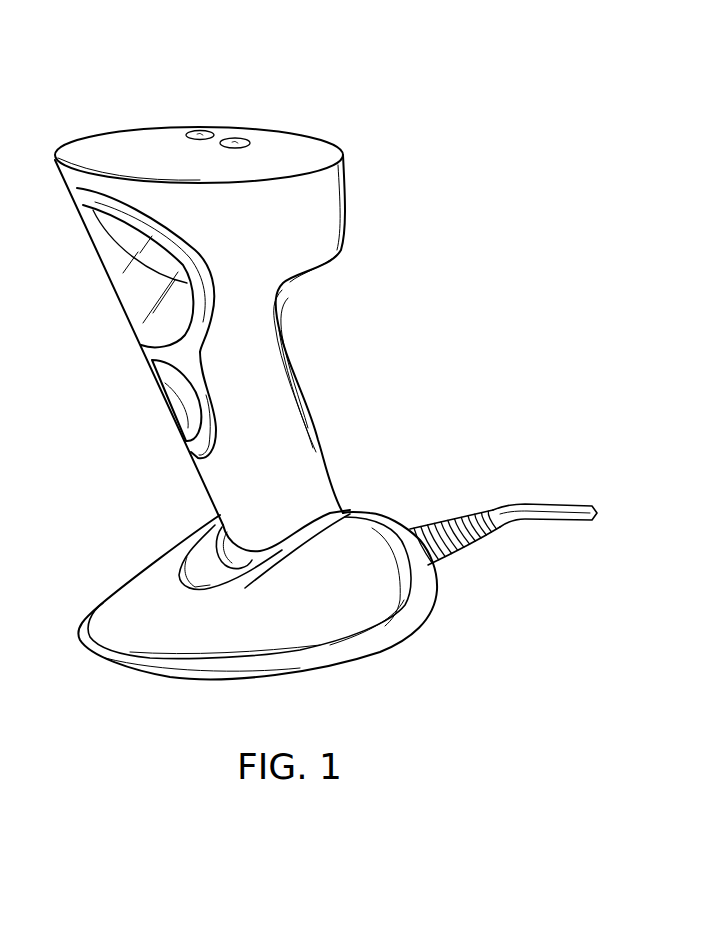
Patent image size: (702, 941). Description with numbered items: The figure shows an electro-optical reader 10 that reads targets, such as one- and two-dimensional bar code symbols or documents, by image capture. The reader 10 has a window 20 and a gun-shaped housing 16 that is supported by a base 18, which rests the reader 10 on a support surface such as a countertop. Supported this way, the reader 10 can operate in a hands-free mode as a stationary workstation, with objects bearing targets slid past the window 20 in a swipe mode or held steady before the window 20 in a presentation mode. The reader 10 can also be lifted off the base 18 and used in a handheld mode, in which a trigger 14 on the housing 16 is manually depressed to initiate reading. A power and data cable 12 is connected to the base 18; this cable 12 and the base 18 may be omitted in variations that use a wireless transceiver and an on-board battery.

The electro-optical reader 10 is at (392, 232).
The power and data cable 12 is at (535, 507).
The trigger 14 is at (162, 403).
The gun-shaped housing 16 is at (293, 364).
The base 18 is at (113, 603).
The window 20 is at (115, 263).